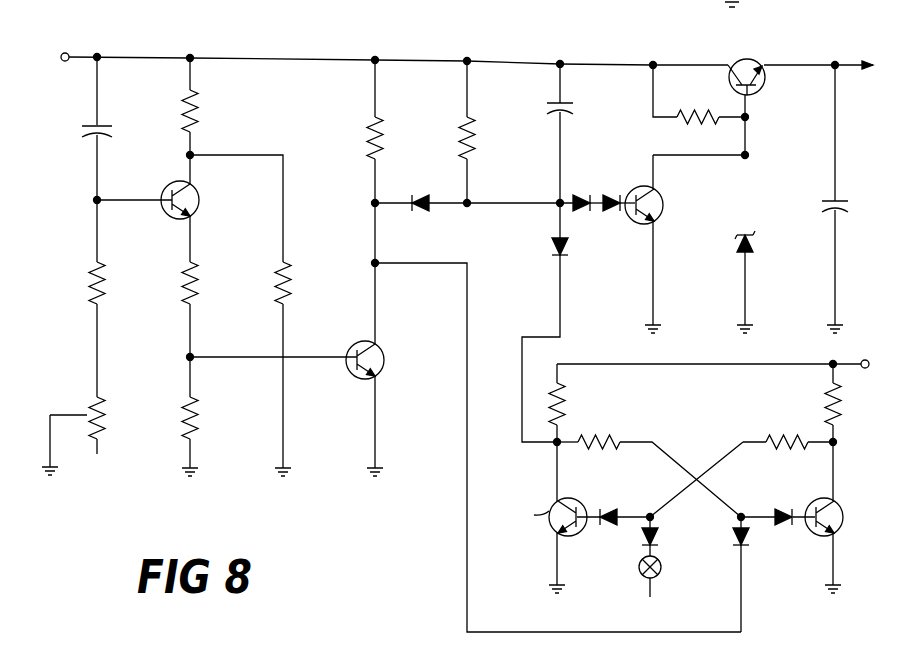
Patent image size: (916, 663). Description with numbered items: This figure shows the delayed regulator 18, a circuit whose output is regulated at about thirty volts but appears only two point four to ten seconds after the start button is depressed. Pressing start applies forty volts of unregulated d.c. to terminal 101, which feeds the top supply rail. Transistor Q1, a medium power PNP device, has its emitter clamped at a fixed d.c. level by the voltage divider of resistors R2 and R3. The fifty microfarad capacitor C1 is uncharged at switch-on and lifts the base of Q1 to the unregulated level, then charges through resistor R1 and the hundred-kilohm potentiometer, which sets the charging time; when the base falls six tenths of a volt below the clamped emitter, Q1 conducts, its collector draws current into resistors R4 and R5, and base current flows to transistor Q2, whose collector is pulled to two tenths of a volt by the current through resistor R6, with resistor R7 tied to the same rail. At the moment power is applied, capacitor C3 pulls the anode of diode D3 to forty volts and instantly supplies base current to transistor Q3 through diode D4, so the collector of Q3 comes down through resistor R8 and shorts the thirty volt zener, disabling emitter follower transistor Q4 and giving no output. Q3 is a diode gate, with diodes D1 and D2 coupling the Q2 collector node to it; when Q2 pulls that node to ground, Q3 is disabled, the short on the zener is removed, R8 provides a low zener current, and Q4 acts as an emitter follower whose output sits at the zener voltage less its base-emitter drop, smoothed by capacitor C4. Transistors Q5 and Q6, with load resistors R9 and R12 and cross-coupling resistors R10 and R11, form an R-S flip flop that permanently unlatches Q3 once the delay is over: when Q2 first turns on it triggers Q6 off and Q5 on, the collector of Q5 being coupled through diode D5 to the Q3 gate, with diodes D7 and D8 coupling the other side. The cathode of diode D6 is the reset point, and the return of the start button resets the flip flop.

The terminal 101 is at (68, 53).
The delayed regulator 18 is at (465, 317).
The capacitor C1 is at (101, 128).
The capacitor C3 is at (585, 133).
The capacitor C4 is at (826, 199).
The resistor R1 is at (117, 286).
The resistor R2 is at (211, 106).
The resistor R3 is at (303, 286).
The resistor R4 is at (213, 286).
The resistor R5 is at (202, 422).
The resistor R6 is at (395, 140).
The resistor R7 is at (488, 140).
The resistor R8 is at (698, 117).
The resistor R9 is at (574, 396).
The resistor R10 is at (599, 446).
The resistor R11 is at (787, 446).
The resistor R12 is at (849, 404).
The medium power PNP transistor Q1 is at (198, 191).
The transistor Q2 is at (378, 346).
The diode gate transistor Q3 is at (651, 193).
The emitter follower transistor Q4 is at (763, 87).
The transistor Q5 is at (549, 503).
The transistor Q6 is at (835, 504).
The diode D1 is at (421, 213).
The diode D2 is at (572, 230).
The diode D3 is at (686, 224).
The diode D4 is at (611, 191).
The diode D5 is at (621, 532).
The diode D6 is at (679, 557).
The diode D7 is at (727, 574).
The diode D8 is at (778, 531).